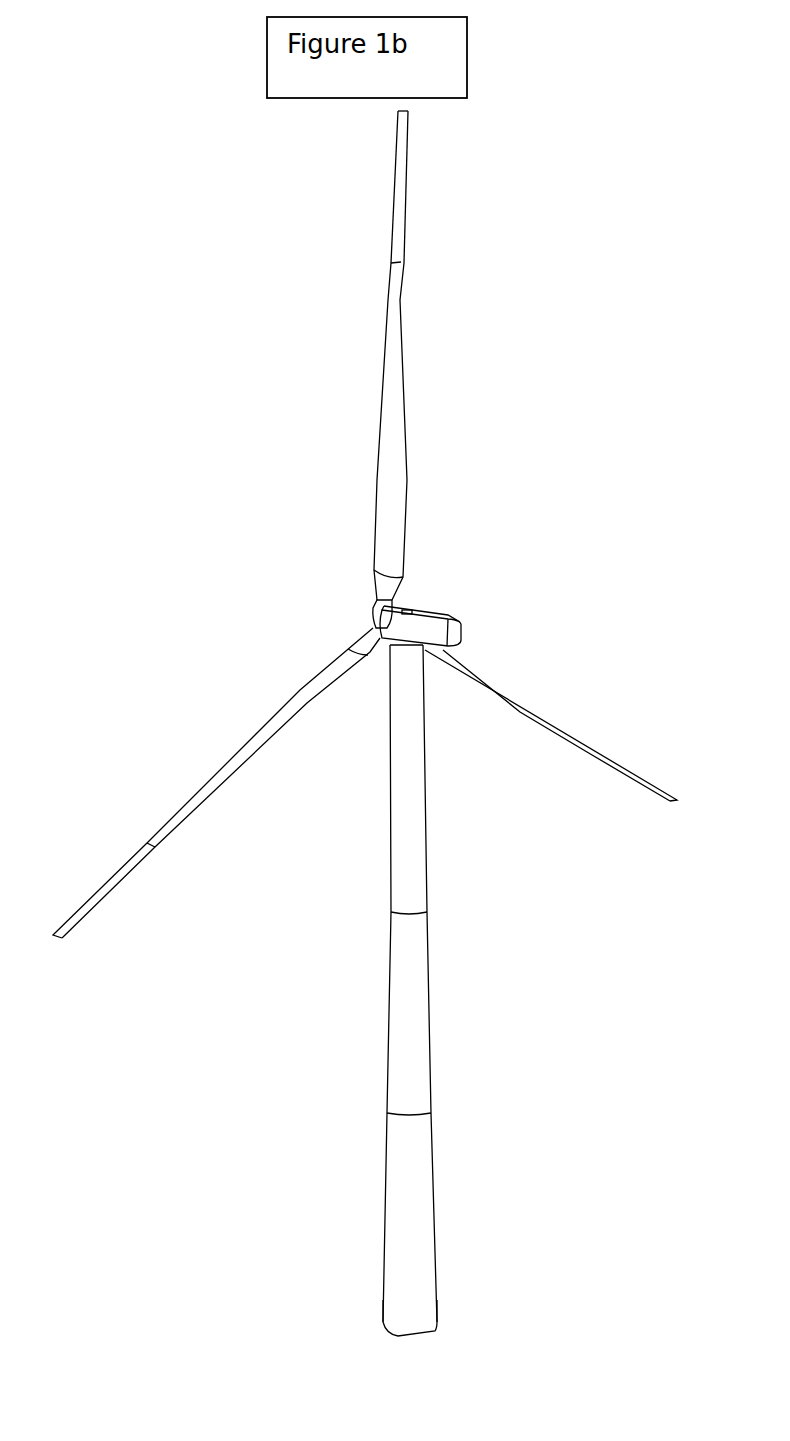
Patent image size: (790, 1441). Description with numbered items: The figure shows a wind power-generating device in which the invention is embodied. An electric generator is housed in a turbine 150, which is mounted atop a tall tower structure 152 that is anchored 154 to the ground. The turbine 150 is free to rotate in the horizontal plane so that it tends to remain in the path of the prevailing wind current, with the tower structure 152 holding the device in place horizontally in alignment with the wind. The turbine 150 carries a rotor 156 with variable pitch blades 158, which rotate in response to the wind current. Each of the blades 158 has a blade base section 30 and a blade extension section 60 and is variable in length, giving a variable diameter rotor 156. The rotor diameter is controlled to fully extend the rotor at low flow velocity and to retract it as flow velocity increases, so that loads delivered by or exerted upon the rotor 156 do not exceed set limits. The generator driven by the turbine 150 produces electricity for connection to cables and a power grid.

The blade base section 30 is at (325, 355).
The blade extension section 60 is at (393, 172).
The turbine 150 is at (450, 622).
The tower structure 152 is at (415, 978).
The anchor 154 is at (398, 1335).
The rotor 156 is at (370, 613).
The variable pitch blades 158 is at (303, 700).